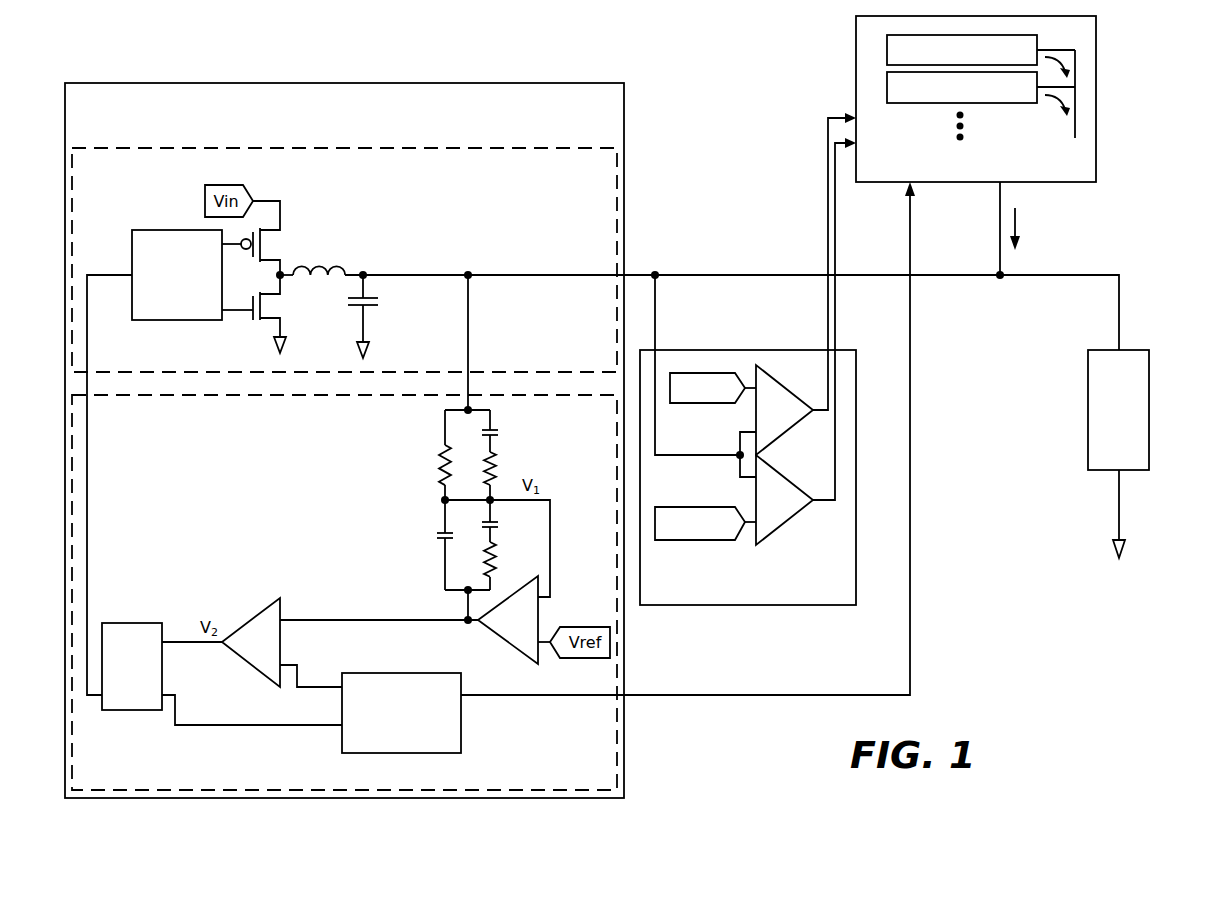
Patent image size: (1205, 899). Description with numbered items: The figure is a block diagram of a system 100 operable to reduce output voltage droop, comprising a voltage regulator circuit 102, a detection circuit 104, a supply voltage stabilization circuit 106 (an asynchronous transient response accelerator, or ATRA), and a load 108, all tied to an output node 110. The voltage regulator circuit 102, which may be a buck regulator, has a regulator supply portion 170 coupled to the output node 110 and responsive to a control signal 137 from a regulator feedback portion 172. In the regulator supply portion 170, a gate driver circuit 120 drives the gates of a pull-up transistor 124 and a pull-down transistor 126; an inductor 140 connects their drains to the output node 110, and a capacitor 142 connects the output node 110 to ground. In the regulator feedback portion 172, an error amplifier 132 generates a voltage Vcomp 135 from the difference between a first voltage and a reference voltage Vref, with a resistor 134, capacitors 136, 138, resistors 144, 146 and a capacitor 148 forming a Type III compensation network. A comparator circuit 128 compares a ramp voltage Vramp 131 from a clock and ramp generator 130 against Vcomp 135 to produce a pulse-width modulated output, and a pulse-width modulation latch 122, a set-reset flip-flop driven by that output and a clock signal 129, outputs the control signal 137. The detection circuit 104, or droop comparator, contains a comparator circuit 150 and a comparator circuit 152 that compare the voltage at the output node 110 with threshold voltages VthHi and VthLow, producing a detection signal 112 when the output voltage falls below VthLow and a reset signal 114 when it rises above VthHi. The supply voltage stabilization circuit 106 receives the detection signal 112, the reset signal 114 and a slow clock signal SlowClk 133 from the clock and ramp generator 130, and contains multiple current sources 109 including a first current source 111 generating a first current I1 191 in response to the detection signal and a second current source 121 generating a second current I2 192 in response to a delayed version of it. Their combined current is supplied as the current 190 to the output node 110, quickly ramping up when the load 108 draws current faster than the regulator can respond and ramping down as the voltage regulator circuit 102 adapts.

The system 100 is at (1068, 648).
The voltage regulator circuit 102 is at (450, 110).
The detection circuit 104 is at (748, 440).
The supply voltage stabilization circuit 106 is at (850, 99).
The load 108 is at (1107, 433).
The current sources 109 is at (1034, 126).
The output node 110 is at (1045, 275).
The first current source 111 is at (1028, 59).
The detection signal 112 is at (835, 216).
The reset signal 114 is at (828, 136).
The gate driver circuit 120 is at (177, 230).
The second current source 121 is at (1028, 97).
The pulse-width modulation latch 122 is at (135, 623).
The pull-up transistor 124 is at (268, 252).
The pull-down transistor 126 is at (268, 312).
The comparator circuit 128 is at (276, 598).
The clock signal 129 is at (221, 725).
The clock and ramp generator 130 is at (461, 749).
The ramp voltage 131 is at (302, 672).
The error amplifier 132 is at (520, 651).
The clock signal SlowClk 133 is at (728, 694).
The resistor 134 is at (498, 553).
The voltage Vcomp 135 is at (297, 620).
The capacitor 136 is at (437, 534).
The control signal 137 is at (87, 507).
The capacitor 138 is at (498, 524).
The inductor 140 is at (345, 268).
The capacitor 142 is at (383, 308).
The resistor 144 is at (440, 455).
The resistor 146 is at (497, 458).
The capacitor 148 is at (497, 431).
The comparator circuit 150 is at (779, 379).
The comparator circuit 152 is at (789, 470).
The regulator supply portion 170 is at (307, 172).
The regulator feedback portion 172 is at (328, 418).
The current 190 is at (1018, 214).
The first current I1 191 is at (1080, 57).
The second current I2 192 is at (1080, 95).